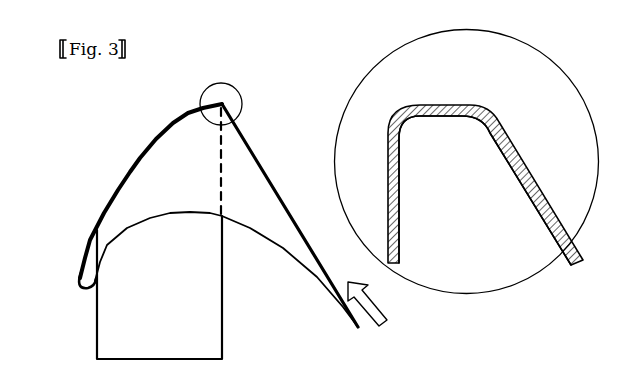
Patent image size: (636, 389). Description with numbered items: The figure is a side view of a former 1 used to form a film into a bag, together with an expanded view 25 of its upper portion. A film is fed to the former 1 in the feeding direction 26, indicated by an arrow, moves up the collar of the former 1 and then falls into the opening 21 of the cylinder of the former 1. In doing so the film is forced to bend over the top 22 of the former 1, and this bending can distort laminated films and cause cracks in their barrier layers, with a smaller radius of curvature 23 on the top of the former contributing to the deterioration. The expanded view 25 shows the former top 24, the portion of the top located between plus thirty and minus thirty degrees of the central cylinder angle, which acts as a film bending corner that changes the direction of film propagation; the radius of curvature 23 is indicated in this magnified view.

The former 1 is at (93, 348).
The opening 21 is at (138, 160).
The top 22 is at (334, 170).
The radius of curvature 23 is at (402, 130).
The former top 24 is at (418, 103).
The expanded view 25 is at (467, 160).
The feeding direction 26 is at (376, 317).